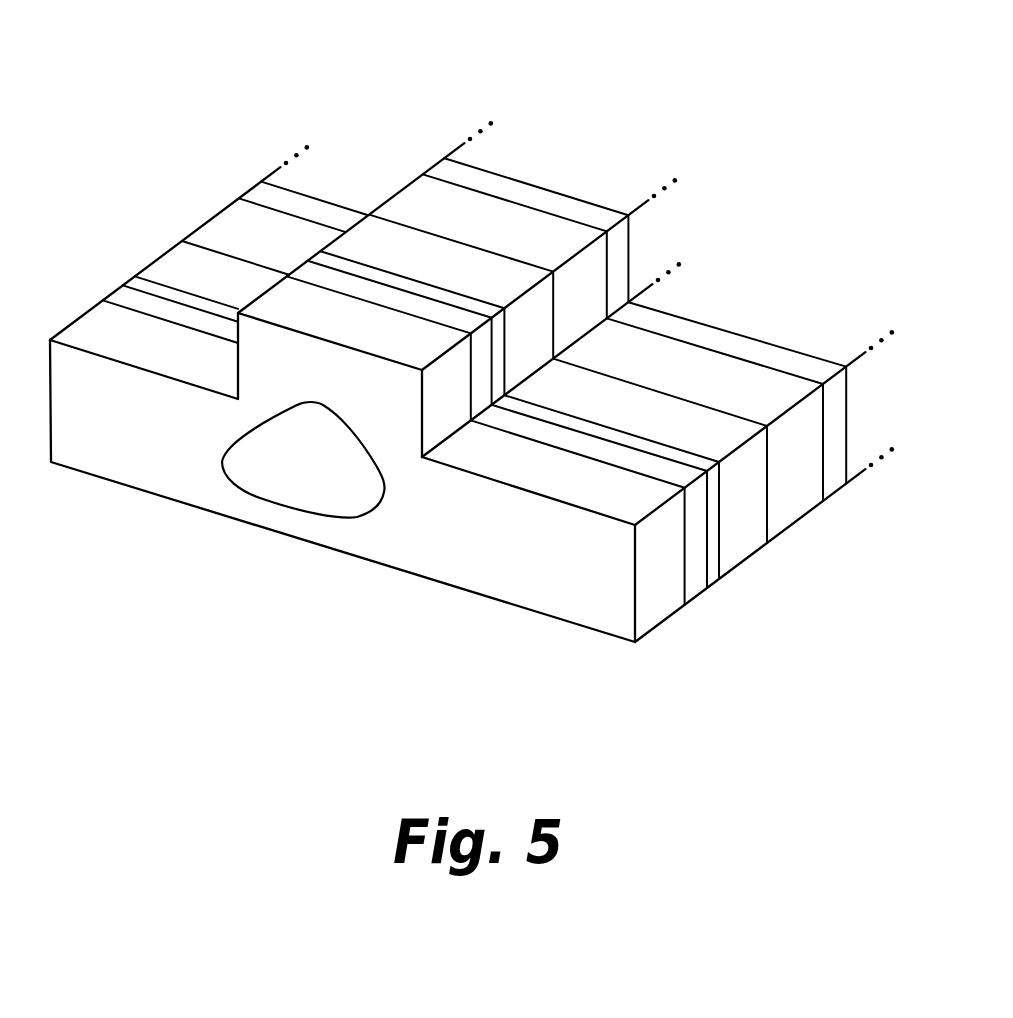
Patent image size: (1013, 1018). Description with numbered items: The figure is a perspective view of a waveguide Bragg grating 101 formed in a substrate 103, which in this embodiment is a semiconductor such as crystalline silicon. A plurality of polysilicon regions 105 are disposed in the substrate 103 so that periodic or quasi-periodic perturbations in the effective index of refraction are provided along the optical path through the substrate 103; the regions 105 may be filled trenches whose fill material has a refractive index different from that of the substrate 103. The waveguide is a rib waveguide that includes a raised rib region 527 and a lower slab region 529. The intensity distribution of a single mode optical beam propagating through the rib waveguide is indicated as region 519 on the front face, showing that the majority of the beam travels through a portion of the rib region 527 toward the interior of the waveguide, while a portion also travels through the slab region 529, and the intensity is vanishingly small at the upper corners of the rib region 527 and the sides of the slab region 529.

The waveguide Bragg grating 101 is at (460, 342).
The substrate 103 is at (254, 188).
The regions 105 is at (795, 522).
The region 519 is at (303, 460).
The rib region 527 is at (343, 389).
The slab region 529 is at (585, 594).